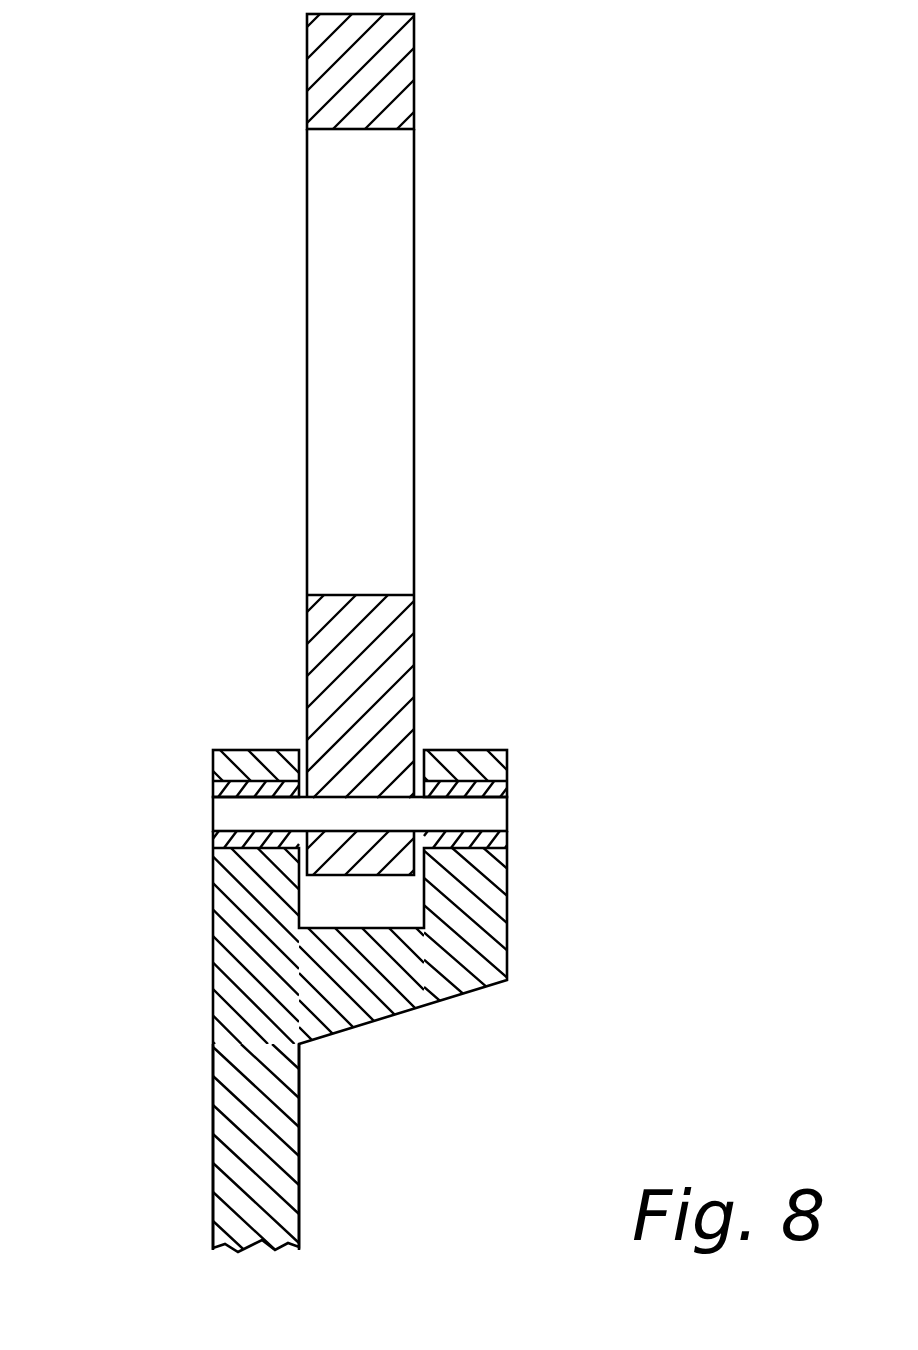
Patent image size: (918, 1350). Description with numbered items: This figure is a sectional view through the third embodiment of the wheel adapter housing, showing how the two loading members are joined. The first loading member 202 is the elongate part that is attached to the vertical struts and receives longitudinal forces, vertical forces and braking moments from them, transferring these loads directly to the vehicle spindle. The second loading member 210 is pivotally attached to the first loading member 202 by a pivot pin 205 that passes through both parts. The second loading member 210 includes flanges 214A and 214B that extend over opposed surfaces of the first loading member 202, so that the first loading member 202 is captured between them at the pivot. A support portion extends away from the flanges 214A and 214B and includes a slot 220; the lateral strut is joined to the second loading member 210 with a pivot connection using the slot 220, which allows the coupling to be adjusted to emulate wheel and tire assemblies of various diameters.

The first loading member 202 is at (414, 622).
The pivot pin 205 is at (490, 813).
The second loading member 210 is at (540, 927).
The flange 214A is at (494, 750).
The flange 214B is at (213, 750).
The slot 220 is at (300, 1140).